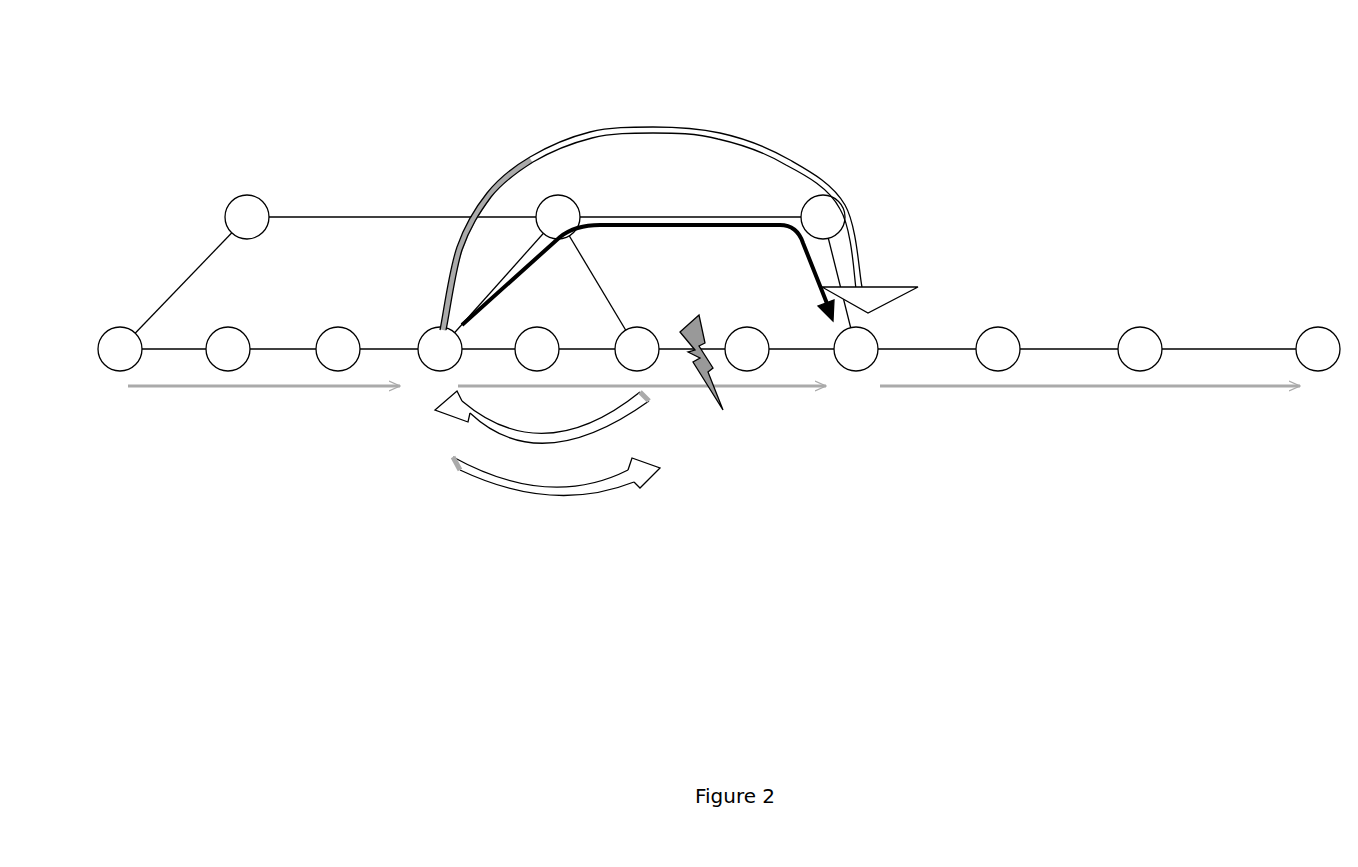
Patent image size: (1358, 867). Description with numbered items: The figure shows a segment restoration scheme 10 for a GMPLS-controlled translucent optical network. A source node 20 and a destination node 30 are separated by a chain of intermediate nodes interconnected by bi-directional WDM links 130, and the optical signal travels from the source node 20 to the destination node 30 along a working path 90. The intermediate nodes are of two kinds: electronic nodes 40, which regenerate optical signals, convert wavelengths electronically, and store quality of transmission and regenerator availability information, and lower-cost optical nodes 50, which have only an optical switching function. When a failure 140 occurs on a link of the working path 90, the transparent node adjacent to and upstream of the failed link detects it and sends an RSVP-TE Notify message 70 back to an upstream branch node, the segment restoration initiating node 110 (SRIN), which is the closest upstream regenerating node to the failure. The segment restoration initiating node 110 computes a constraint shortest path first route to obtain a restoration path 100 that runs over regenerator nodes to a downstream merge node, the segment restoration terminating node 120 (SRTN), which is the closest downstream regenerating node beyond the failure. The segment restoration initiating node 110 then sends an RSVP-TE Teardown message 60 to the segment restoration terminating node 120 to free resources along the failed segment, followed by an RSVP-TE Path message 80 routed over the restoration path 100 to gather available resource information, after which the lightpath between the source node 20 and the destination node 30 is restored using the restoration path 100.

The segment restoration scheme 10 is at (990, 562).
The source node 20 is at (107, 373).
The destination node 30 is at (1305, 373).
The electronic nodes 40 is at (707, 314).
The optical nodes 50 is at (313, 373).
The RSVP-TE Teardown message 60 is at (505, 498).
The RSVP-TE Notify message 70 is at (570, 442).
The RSVP-TE Path message 80 is at (757, 143).
The working path 90 is at (327, 390).
The restoration path 100 is at (680, 223).
The segment restoration initiating node 110 is at (433, 324).
The segment restoration terminating node 120 is at (855, 374).
The links 130 is at (182, 273).
The failure 140 is at (723, 402).